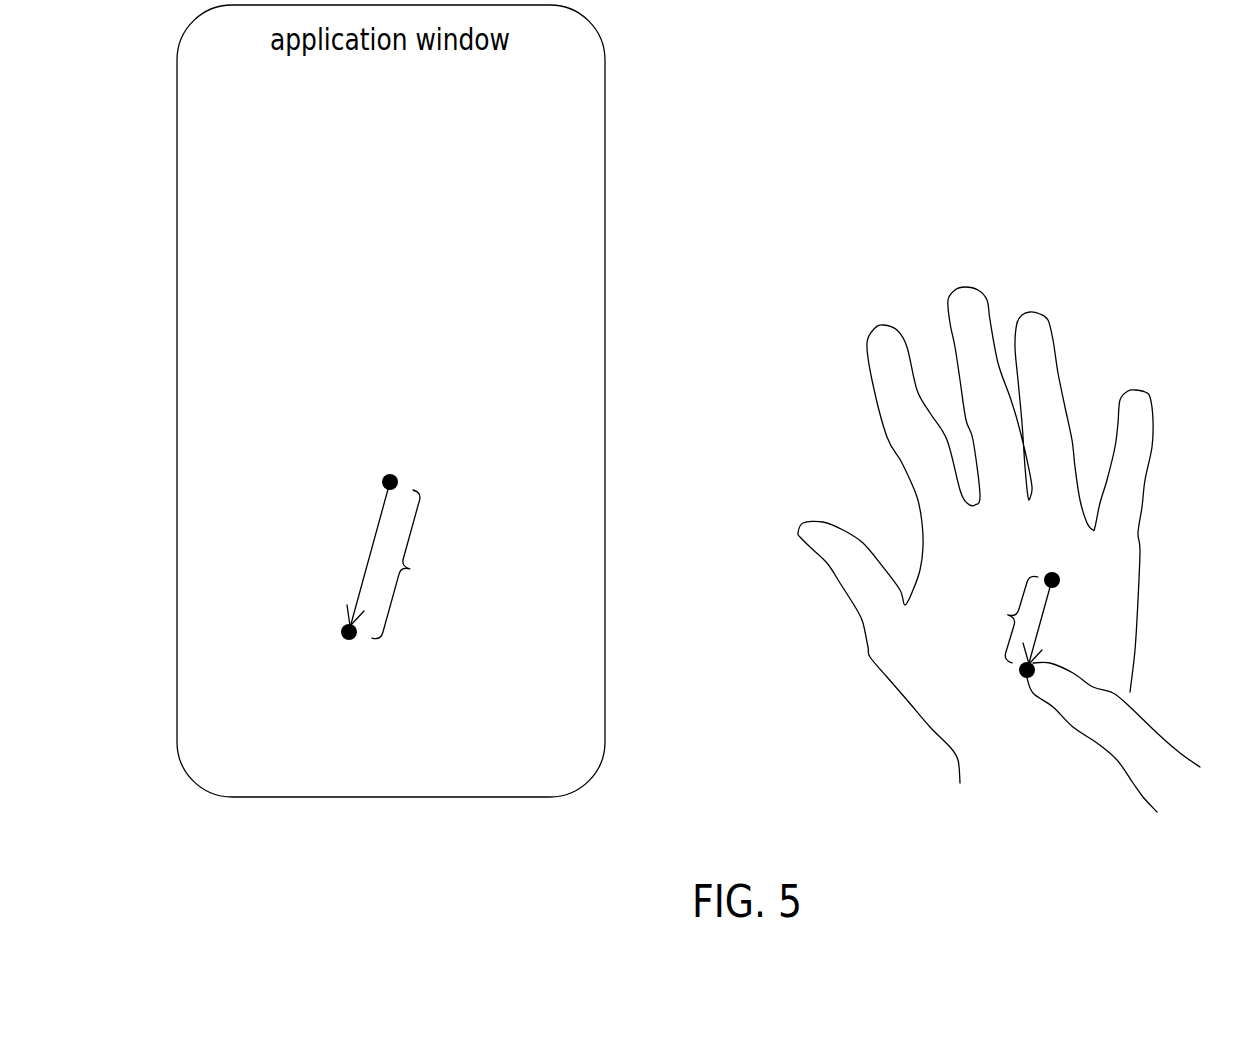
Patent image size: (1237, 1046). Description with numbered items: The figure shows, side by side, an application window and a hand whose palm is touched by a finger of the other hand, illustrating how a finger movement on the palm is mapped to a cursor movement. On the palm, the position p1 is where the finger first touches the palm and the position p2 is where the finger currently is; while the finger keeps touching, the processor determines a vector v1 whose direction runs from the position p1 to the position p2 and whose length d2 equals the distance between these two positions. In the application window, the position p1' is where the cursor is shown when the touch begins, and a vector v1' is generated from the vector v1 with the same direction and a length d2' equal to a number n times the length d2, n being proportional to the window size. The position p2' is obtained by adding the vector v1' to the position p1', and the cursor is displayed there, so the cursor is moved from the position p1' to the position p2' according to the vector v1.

The position p1' is at (394, 466).
The position p2' is at (344, 653).
The vector v1' is at (327, 554).
The length d2' is at (416, 566).
The position p1 is at (1060, 564).
The position p2 is at (1015, 688).
The vector v1 is at (1127, 622).
The length d2 is at (1002, 617).